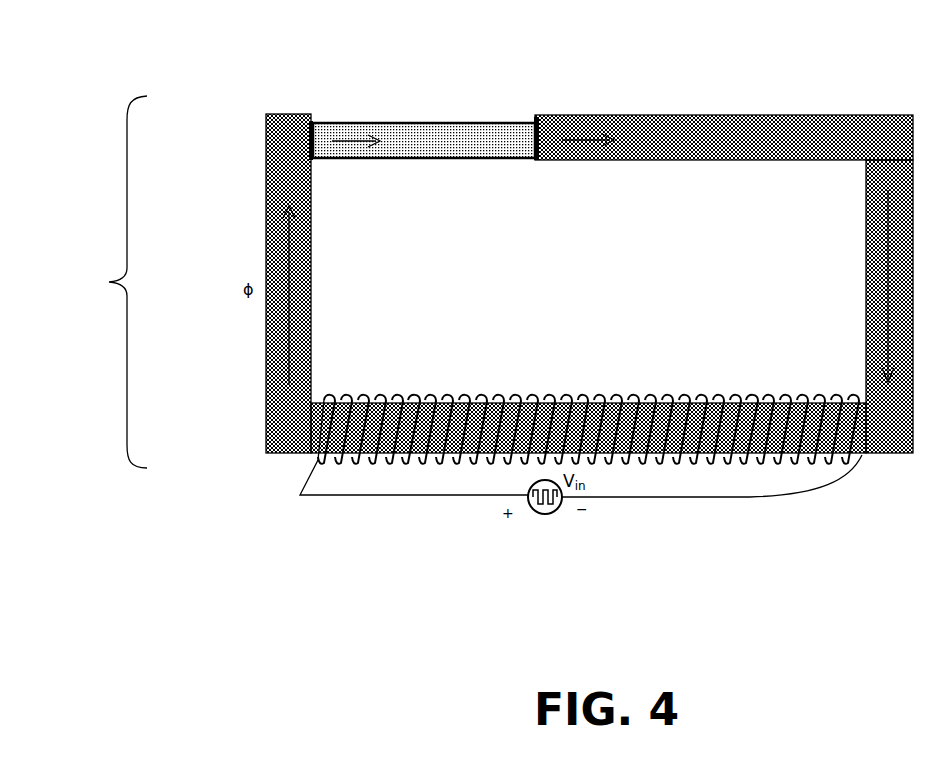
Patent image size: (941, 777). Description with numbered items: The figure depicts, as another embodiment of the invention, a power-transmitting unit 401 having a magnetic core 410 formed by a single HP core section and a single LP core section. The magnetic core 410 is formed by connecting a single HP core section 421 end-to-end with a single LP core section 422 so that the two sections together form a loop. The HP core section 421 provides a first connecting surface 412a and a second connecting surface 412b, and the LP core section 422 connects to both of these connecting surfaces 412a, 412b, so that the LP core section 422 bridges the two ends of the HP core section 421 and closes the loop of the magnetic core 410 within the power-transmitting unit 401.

The power-transmitting unit 401 is at (103, 282).
The magnetic core 410 is at (534, 283).
The first connecting surface 412a is at (305, 150).
The second connecting surface 412b is at (541, 150).
The HP core section 421 is at (256, 385).
The LP core section 422 is at (479, 140).